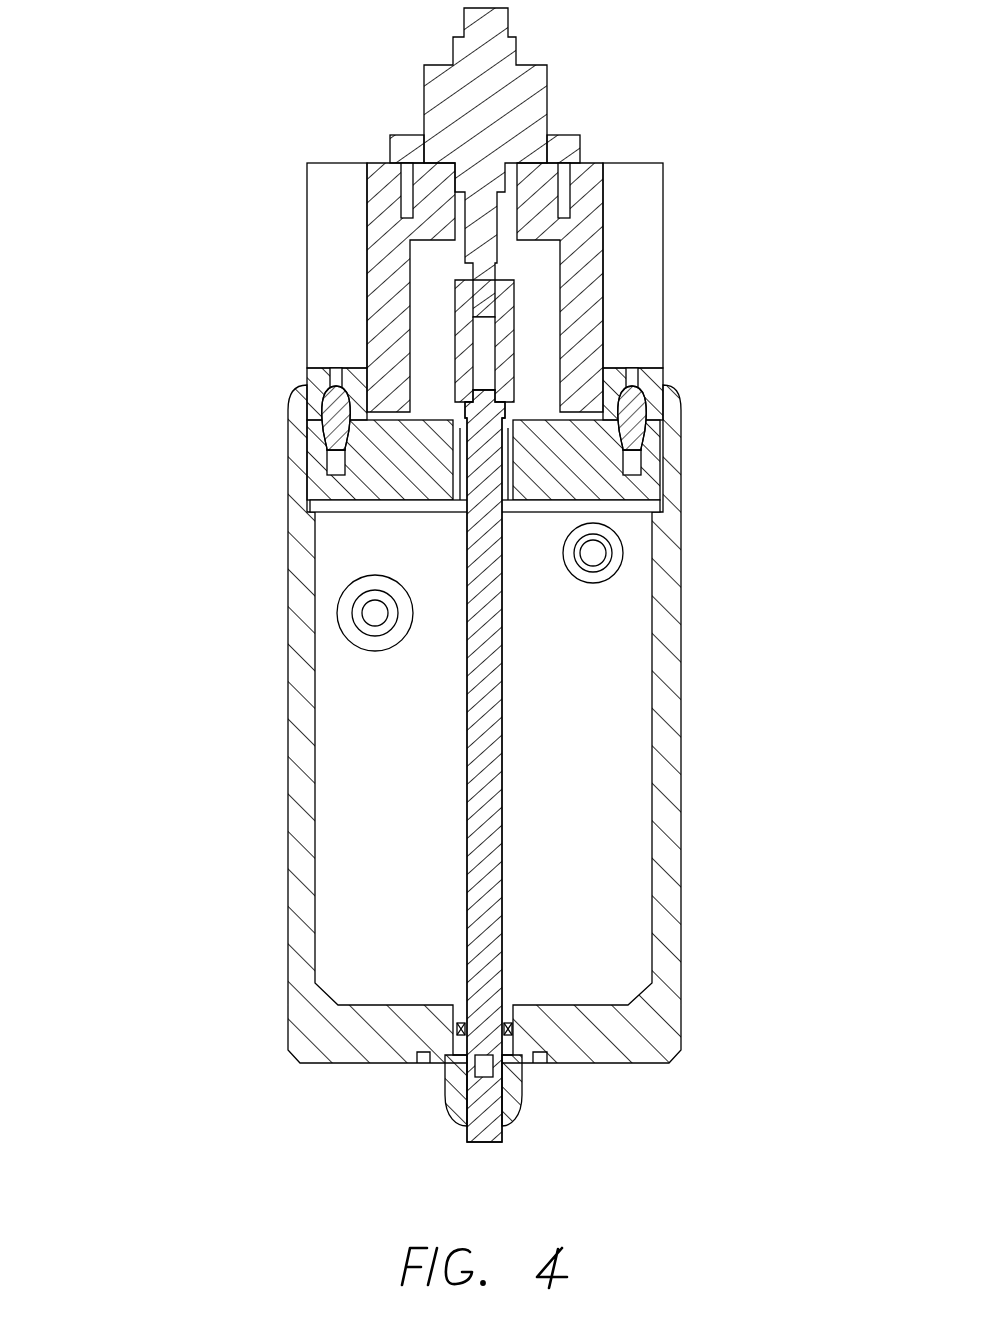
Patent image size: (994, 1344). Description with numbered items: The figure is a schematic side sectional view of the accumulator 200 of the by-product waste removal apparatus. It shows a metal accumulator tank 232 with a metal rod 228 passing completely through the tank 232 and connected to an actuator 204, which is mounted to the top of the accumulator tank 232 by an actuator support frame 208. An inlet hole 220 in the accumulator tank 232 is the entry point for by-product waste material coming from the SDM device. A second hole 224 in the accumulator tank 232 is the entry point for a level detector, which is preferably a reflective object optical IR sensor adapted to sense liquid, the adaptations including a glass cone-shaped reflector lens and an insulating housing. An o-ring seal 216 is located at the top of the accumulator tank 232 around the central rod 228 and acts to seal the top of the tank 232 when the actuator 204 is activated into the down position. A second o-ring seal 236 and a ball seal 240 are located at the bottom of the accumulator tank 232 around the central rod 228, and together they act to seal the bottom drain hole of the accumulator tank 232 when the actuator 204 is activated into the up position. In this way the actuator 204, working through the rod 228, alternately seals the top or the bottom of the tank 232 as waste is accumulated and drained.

The accumulator 200 is at (185, 115).
The actuator 204 is at (548, 107).
The actuator support frame 208 is at (665, 213).
The o-ring seal 216 is at (520, 413).
The inlet hole 220 is at (623, 553).
The hole 224 is at (338, 625).
The metal rod 228 is at (502, 725).
The accumulator tank 232 is at (681, 905).
The second o-ring seal 236 is at (513, 1032).
The ball seal 240 is at (522, 1093).